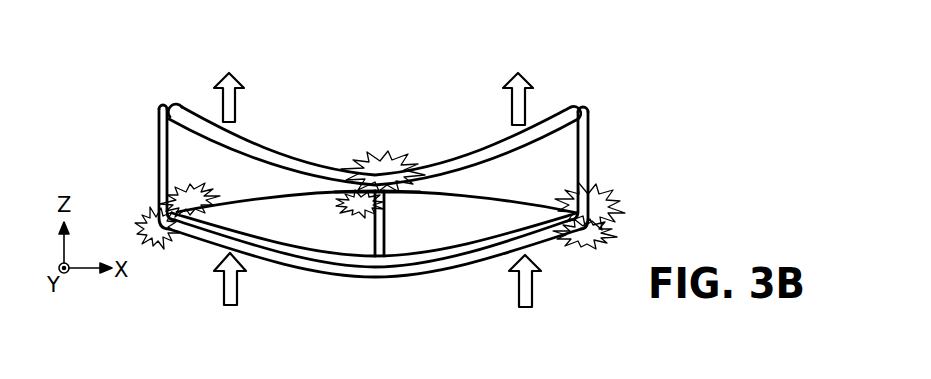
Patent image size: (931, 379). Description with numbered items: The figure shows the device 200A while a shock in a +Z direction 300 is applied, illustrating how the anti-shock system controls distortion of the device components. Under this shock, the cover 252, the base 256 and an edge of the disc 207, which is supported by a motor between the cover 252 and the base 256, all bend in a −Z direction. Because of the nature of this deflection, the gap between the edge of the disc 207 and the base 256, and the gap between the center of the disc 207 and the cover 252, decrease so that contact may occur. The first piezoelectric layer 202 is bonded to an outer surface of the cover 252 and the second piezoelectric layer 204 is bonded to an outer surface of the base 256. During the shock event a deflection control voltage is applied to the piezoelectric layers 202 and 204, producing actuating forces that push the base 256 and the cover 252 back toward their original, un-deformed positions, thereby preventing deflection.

The device 200A is at (489, 188).
The first piezoelectric layer 202 is at (409, 131).
The cover 252 is at (549, 134).
The second piezoelectric layer 204 is at (473, 265).
The base 256 is at (285, 255).
The disc 207 is at (507, 206).
The shock in a +Z direction 300 is at (229, 101).